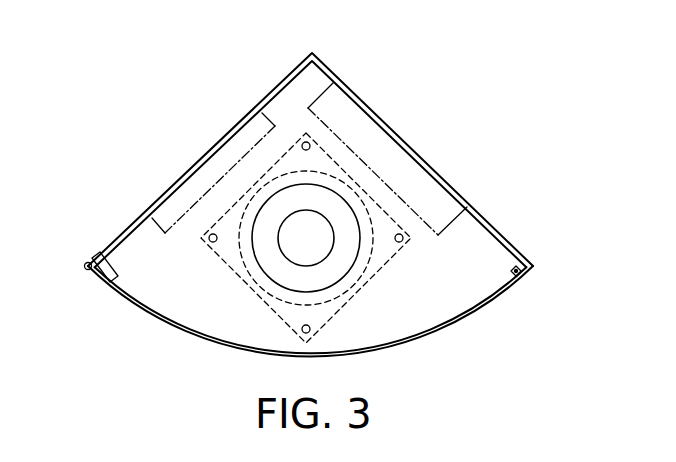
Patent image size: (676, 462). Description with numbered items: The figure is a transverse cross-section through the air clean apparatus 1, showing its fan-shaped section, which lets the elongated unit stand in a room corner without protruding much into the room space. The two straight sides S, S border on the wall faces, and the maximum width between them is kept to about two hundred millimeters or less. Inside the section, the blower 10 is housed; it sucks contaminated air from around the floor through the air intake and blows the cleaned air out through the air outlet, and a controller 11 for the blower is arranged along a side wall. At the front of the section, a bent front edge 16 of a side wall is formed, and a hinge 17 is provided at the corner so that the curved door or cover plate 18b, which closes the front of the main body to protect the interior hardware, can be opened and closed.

The air clean apparatus 1 is at (345, 62).
The blower 10 is at (342, 257).
The controller for a blower 11 is at (445, 180).
The bent front edge of a side wall 16 is at (117, 276).
The hinge 17 is at (84, 266).
The cover plate 18b is at (454, 324).
The side S is at (127, 229).